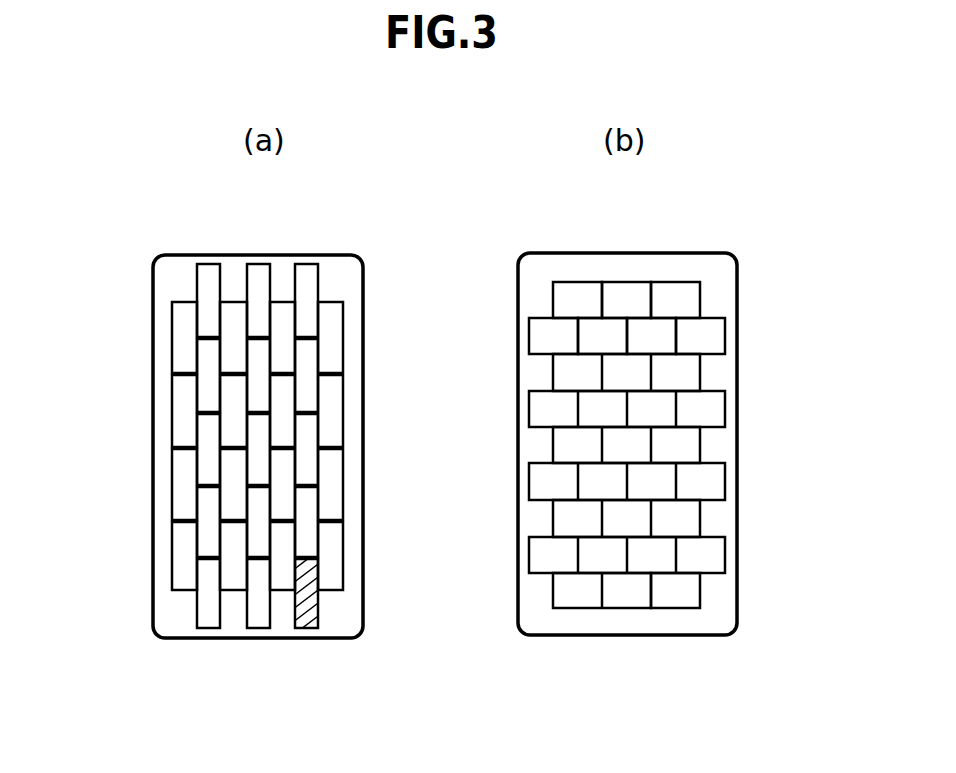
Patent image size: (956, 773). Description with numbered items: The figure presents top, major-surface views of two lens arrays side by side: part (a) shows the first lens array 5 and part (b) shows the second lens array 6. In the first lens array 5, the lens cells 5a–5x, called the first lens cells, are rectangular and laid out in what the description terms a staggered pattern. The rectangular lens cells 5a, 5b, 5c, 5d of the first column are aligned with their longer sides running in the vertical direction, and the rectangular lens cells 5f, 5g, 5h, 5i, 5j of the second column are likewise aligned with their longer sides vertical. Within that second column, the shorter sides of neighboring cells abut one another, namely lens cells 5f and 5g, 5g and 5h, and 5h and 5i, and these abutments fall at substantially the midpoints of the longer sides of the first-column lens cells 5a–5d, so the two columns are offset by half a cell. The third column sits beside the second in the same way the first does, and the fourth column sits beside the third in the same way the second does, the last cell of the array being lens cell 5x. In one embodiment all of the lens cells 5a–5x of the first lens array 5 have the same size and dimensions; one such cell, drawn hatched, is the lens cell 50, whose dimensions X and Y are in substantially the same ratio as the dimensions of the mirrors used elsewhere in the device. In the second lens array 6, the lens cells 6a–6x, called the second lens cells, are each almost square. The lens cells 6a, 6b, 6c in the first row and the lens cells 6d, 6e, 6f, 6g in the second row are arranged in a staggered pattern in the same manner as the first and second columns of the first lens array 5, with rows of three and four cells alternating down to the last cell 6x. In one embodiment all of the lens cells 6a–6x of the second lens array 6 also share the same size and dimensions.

The first lens array 5 is at (342, 237).
The lens cell 5a is at (178, 312).
The lens cell 5b is at (182, 410).
The lens cell 5c is at (182, 502).
The lens cell 5d is at (180, 578).
The lens cell 5f is at (210, 272).
The lens cell 5g is at (203, 362).
The lens cell 5h is at (205, 463).
The lens cell 5i is at (205, 545).
The lens cell 5j is at (203, 620).
The lens cell 5x is at (330, 568).
The lens cell 50 is at (301, 622).
The second lens array 6 is at (708, 238).
The lens cell 6a is at (572, 297).
The lens cell 6b is at (627, 293).
The lens cell 6c is at (683, 302).
The lens cell 6d is at (550, 337).
The lens cell 6e is at (600, 340).
The lens cell 6f is at (655, 342).
The lens cell 6g is at (710, 338).
The lens cell 6x is at (685, 598).